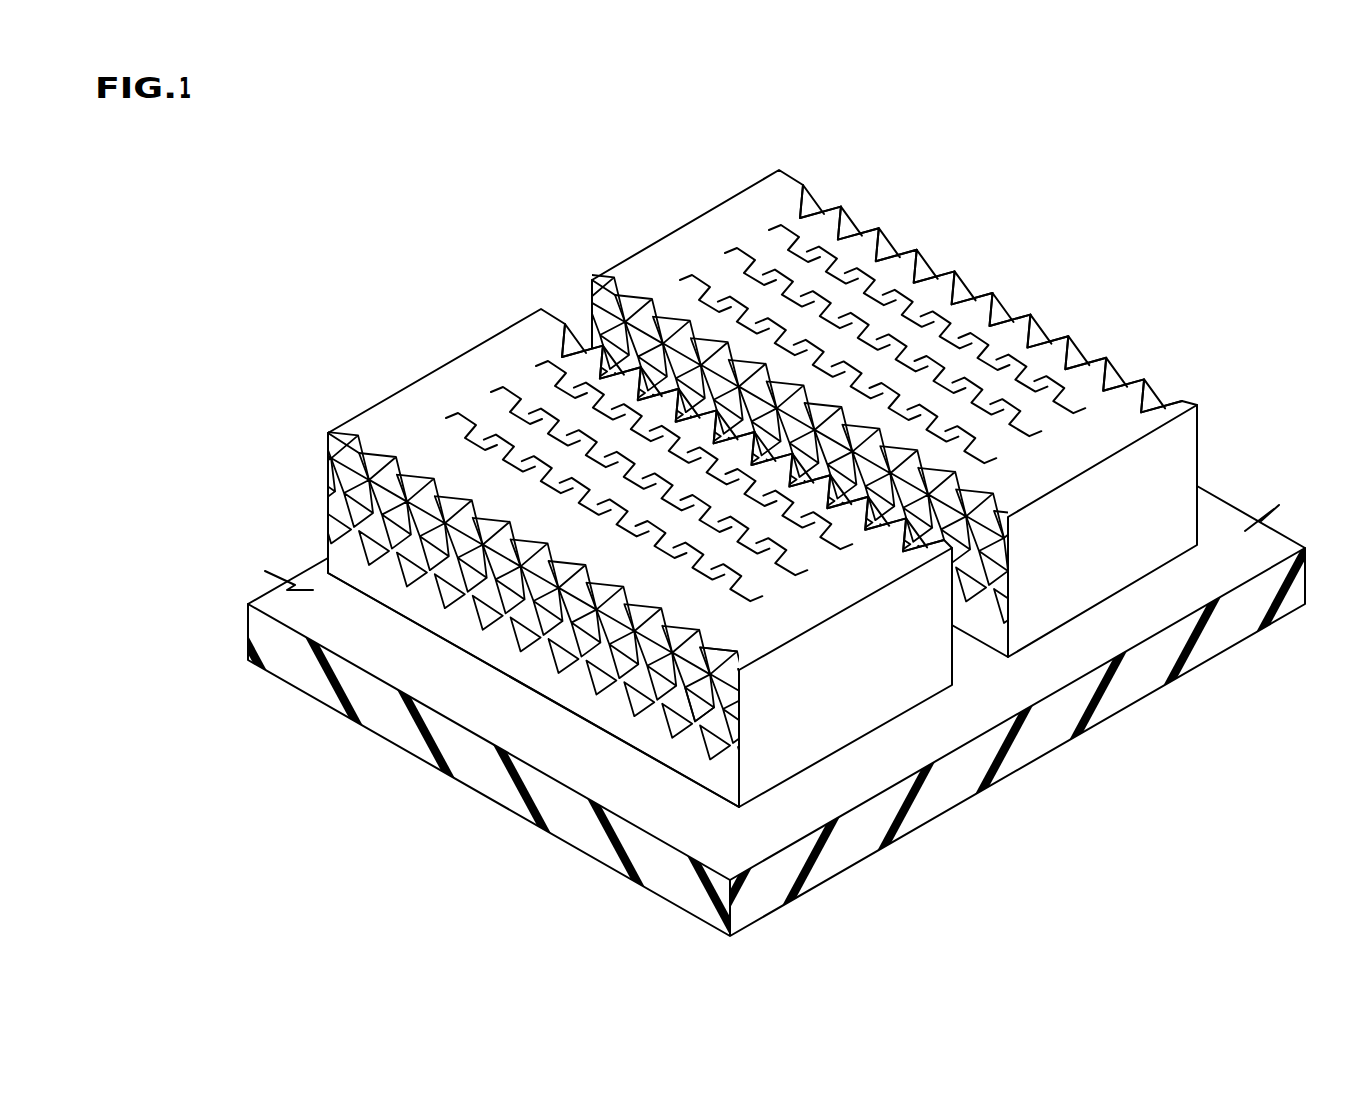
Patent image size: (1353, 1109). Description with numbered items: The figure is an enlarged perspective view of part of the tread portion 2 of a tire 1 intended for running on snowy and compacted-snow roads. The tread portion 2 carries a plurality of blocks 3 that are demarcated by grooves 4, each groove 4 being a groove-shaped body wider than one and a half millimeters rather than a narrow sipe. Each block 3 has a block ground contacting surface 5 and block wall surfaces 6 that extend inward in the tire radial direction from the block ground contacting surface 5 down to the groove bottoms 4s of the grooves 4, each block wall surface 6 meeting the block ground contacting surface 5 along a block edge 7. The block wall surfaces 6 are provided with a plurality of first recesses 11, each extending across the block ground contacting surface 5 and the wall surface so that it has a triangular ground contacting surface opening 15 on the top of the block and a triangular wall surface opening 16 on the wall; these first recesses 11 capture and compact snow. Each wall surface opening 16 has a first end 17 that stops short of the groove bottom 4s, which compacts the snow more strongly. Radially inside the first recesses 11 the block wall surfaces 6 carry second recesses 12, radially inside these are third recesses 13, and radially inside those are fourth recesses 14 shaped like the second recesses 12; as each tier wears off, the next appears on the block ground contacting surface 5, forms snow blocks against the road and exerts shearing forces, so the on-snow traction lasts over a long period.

The tire 1 is at (748, 547).
The tread portion 2 is at (719, 547).
The block 3 is at (789, 161).
The groove 4 is at (748, 565).
The groove bottom 4s is at (398, 661).
The block ground contacting surface 5 is at (478, 365).
The block wall surface 6 is at (705, 768).
The block edge 7 is at (654, 641).
The first recess 11 is at (695, 622).
The second recess 12 is at (629, 614).
The third recess 13 is at (708, 658).
The fourth recess 14 is at (473, 633).
The ground contacting surface opening 15 is at (718, 653).
The wall surface opening 16 is at (708, 658).
The first end 17 is at (648, 575).